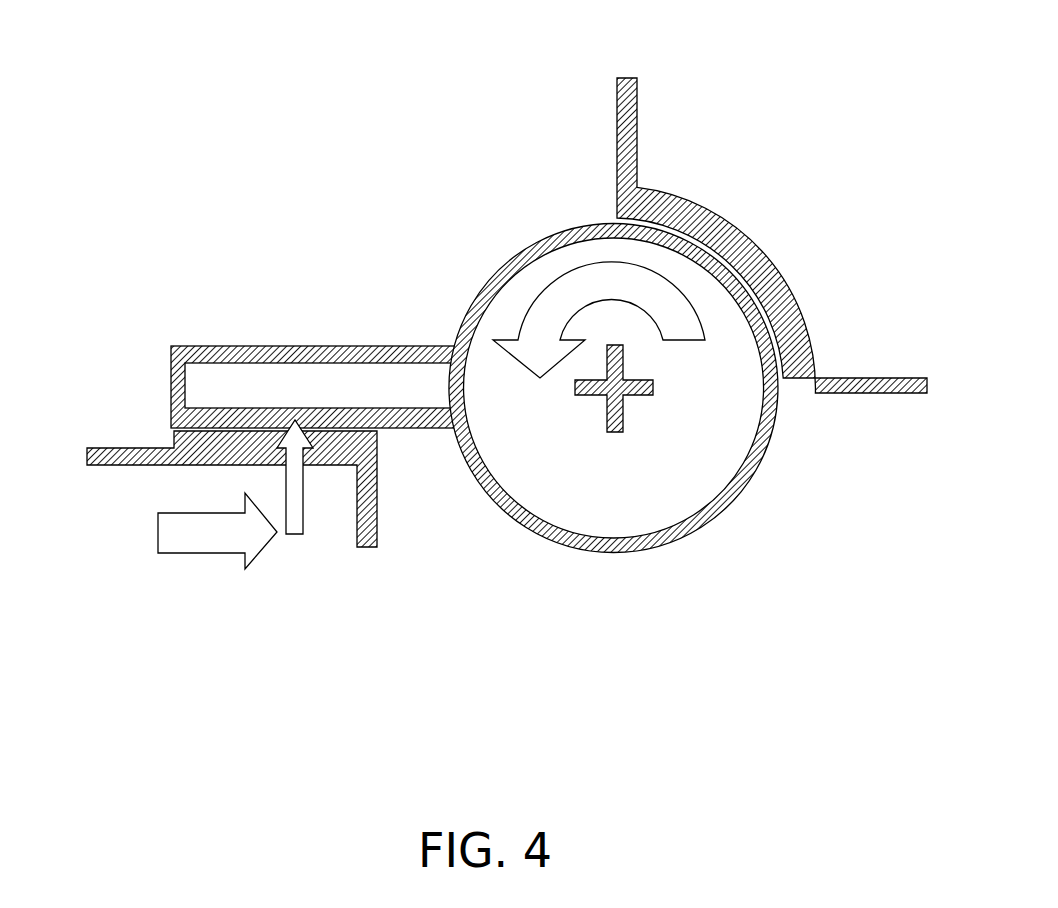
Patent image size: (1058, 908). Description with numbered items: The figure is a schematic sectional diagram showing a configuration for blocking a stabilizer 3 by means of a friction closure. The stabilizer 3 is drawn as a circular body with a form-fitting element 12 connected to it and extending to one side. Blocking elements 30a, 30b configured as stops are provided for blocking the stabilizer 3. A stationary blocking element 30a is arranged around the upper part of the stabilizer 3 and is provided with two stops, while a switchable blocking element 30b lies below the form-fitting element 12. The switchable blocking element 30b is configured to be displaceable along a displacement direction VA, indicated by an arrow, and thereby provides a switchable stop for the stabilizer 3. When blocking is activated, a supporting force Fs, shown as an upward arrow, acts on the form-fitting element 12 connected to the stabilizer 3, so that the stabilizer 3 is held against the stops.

The stabilizer 3 is at (733, 500).
The form-fitting element 12 is at (283, 347).
The stationary blocking element 30a is at (615, 177).
The switchable blocking element 30b is at (173, 440).
The displacement direction VA is at (208, 541).
The supporting force Fs is at (293, 515).